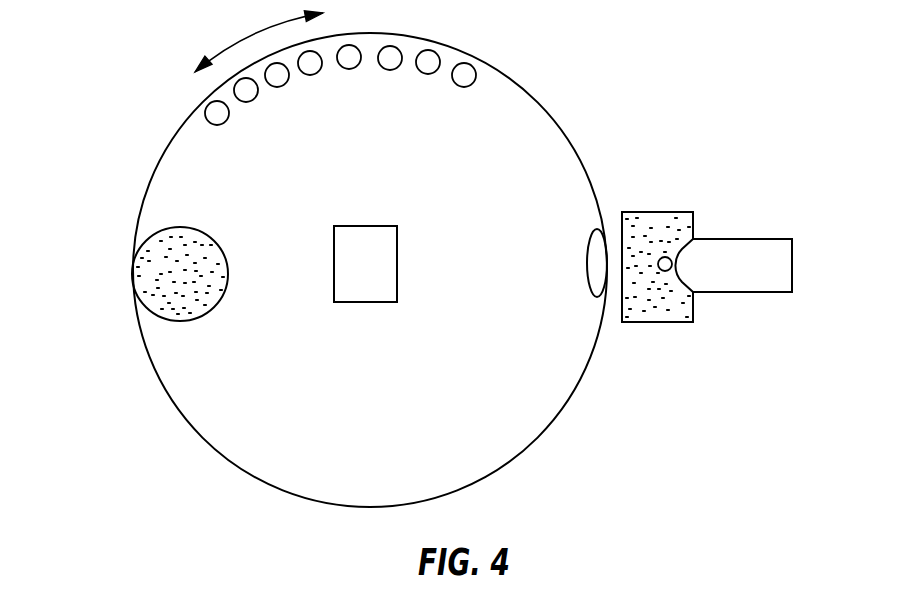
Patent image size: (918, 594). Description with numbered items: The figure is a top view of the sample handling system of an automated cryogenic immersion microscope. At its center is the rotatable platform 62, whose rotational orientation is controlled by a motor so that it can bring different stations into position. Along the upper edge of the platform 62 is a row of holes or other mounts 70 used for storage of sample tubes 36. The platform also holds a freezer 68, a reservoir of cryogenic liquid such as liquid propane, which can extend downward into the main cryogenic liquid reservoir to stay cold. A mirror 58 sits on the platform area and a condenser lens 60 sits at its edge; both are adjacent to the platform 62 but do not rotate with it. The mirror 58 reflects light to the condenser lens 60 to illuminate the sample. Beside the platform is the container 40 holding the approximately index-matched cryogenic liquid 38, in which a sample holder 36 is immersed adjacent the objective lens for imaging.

The rotatable platform 62 is at (151, 108).
The holes or other mounts 70 is at (390, 47).
The mirror 58 is at (378, 237).
The freezer 68 is at (143, 276).
The condenser lens 60 is at (598, 263).
The cryogenic liquid 38 is at (640, 223).
The container 40 is at (693, 227).
The sample holder 36 is at (668, 272).